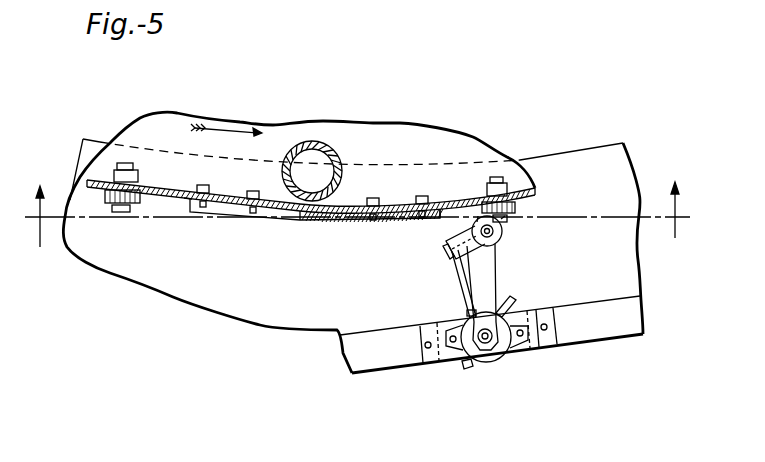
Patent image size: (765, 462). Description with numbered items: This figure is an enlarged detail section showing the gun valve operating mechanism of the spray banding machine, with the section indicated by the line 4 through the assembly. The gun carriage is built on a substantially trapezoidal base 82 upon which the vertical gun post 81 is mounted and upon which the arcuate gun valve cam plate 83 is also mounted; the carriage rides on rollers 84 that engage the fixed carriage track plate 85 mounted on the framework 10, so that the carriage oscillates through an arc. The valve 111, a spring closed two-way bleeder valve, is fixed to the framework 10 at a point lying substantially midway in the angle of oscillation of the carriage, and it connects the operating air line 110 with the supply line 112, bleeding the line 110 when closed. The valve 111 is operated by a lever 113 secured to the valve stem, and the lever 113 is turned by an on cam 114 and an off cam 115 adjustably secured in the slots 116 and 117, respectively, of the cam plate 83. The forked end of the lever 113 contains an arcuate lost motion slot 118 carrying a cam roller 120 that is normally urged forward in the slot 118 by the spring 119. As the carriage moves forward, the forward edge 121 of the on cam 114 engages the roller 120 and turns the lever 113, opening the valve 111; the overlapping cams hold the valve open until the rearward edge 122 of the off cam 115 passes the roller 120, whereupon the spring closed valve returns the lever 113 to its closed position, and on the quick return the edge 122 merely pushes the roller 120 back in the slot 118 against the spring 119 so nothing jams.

The section line 4- 4 is at (363, 202).
The structural steel framework 10 is at (625, 329).
The gun post 81 is at (339, 155).
The base 82 is at (462, 133).
The gun valve cam plate 83 is at (152, 194).
The rollers 84 is at (107, 195).
The carriage track plate 85 is at (582, 157).
The line 110 is at (515, 302).
The valve 111 is at (506, 352).
The supply line 112 is at (474, 366).
The lever 113 is at (491, 280).
The on cam 114 is at (344, 219).
The off cam 115 is at (233, 213).
The slot 116 is at (397, 206).
The slot 117 is at (232, 196).
The lost motion slot 118 is at (455, 235).
The spring 119 is at (458, 272).
The cam roller 120 is at (503, 237).
The forward edge 121 is at (443, 201).
The rearward edge 122 is at (187, 201).